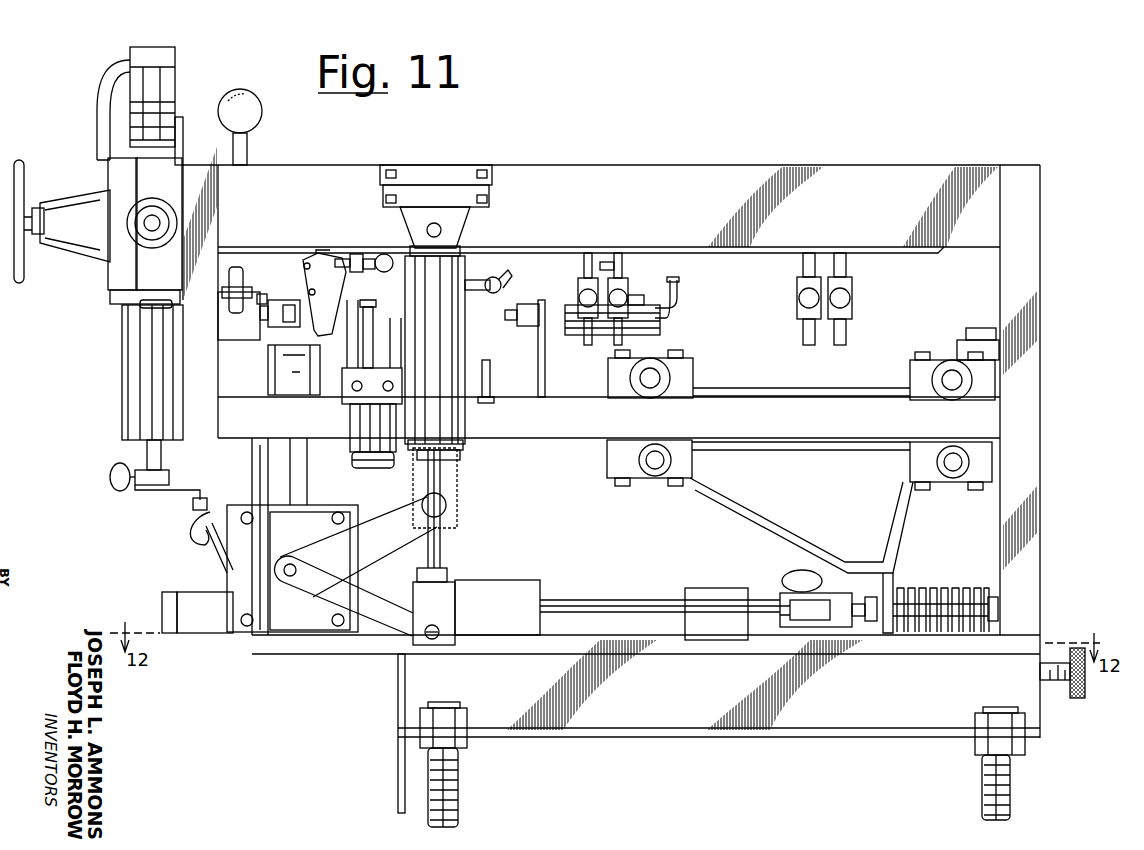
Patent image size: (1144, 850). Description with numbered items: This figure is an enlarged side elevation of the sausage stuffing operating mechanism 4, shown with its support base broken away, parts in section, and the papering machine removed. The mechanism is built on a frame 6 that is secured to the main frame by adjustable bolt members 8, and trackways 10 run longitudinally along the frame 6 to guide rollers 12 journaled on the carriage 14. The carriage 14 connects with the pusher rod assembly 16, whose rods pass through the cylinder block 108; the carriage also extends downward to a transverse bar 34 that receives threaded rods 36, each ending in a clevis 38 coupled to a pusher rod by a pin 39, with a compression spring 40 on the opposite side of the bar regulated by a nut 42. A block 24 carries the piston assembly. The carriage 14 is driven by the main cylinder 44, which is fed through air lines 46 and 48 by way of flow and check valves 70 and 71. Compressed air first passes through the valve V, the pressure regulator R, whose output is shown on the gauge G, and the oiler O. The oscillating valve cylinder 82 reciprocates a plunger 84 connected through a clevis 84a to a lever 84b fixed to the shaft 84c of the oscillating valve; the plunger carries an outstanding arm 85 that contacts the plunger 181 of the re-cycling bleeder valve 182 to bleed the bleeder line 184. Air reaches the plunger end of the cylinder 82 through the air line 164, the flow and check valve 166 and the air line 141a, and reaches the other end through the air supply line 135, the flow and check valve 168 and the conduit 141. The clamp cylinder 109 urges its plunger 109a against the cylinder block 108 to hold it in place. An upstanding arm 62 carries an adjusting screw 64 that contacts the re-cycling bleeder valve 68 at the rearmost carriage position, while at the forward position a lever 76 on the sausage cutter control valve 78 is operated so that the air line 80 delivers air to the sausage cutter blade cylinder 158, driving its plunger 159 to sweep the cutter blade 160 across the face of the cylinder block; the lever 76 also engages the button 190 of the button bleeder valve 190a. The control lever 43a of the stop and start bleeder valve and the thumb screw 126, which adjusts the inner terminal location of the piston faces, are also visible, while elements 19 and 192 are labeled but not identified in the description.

The operating mechanism 4 is at (1062, 246).
The frame 6 is at (1036, 447).
The adjustable bolt members 8 is at (458, 770).
The trackways 10 is at (584, 442).
The rollers 12 is at (665, 448).
The carriage 14 is at (762, 528).
The pusher rod assembly 16 is at (636, 600).
The support block 19 is at (192, 627).
The block 24 is at (700, 592).
The transverse bar 34 is at (892, 585).
The threaded rods 36 is at (871, 622).
The clevis 38 is at (818, 575).
The pin 39 is at (785, 580).
The compression spring 40 is at (940, 588).
The nut 42 is at (998, 608).
The control lever 43a is at (247, 143).
The main cylinder 44 is at (748, 390).
The air line 46 is at (838, 258).
The air line 48 is at (805, 258).
The upstanding arm 62 is at (538, 366).
The adjusting screw 64 is at (515, 328).
The re-cycling bleeder valve 68 is at (662, 328).
The flow and check valve 70 is at (852, 286).
The flow and check valve 71 is at (797, 286).
The lever 76 is at (335, 320).
The sausage cutter control valve 78 is at (358, 256).
The air line 80 is at (388, 256).
The oscillating valve cylinder 82 is at (452, 343).
The plunger 84 is at (443, 520).
The clevis 84a is at (420, 640).
The lever 84b is at (370, 612).
The shaft 84c is at (291, 577).
The outstanding arm 85 is at (460, 461).
The cylinder block 108 is at (328, 512).
The clamp cylinder 109 is at (308, 387).
The plunger 109a is at (258, 470).
The thumb screw 126 is at (1060, 682).
The air supply line 135 is at (610, 270).
The conduit 141 is at (500, 278).
The air line 141a is at (492, 400).
The sausage cutter blade cylinder 158 is at (122, 372).
The plunger 159 is at (147, 458).
The cutter blade 160 is at (214, 558).
The air line 164 is at (584, 265).
The flow and check valve 166 is at (578, 286).
The flow and check valve 168 is at (605, 310).
The plunger 181 is at (352, 460).
The re-cycling bleeder valve 182 is at (340, 415).
The bleeder line 184 is at (376, 315).
The button 190 is at (292, 300).
The button bleeder valve 190a is at (248, 340).
The valve 192 is at (235, 267).
The gauge G is at (130, 58).
The oiler O is at (103, 105).
The pressure regulator R is at (80, 195).
The valve V is at (90, 232).